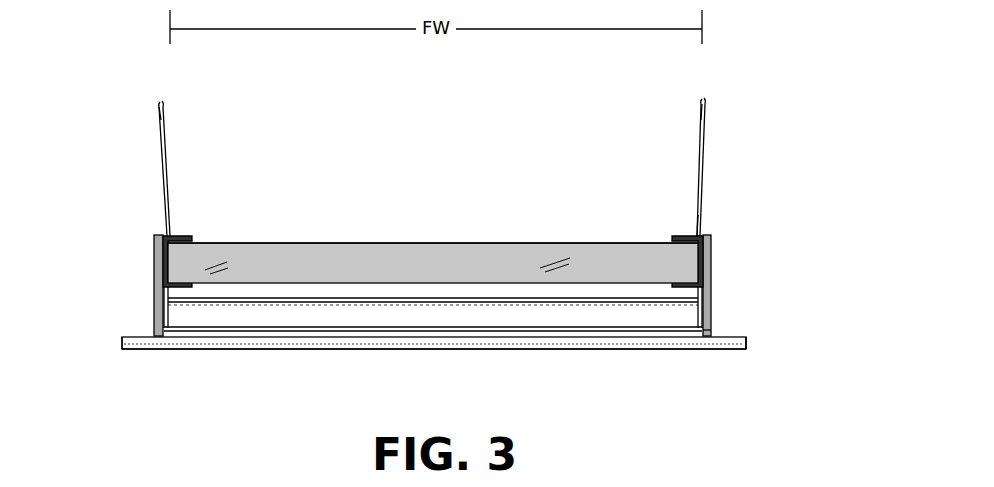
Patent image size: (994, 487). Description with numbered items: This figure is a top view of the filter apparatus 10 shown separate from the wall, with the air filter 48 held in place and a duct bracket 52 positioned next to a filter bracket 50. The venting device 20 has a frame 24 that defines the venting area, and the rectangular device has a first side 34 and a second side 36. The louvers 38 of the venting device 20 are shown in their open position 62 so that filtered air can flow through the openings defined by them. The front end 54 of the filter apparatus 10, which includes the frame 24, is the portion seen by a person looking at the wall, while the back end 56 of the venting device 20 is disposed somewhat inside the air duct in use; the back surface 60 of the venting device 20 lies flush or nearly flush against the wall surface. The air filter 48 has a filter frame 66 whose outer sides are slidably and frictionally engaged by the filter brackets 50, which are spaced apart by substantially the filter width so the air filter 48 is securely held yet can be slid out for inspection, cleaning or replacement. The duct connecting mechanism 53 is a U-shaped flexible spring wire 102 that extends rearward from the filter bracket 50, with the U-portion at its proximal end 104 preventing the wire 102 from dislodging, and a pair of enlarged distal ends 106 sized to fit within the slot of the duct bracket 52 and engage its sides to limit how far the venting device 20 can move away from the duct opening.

The filter apparatus 10 is at (487, 120).
The venting device 20 is at (538, 353).
The frame 24 is at (232, 349).
The first side 34 is at (123, 361).
The second side 36 is at (745, 362).
The louvers 38 is at (653, 318).
The air filter 48 is at (284, 250).
The filter bracket 50 is at (172, 258).
The duct bracket 52 is at (712, 257).
The duct connecting mechanism 53 is at (672, 140).
The front end 54 is at (769, 349).
The back end 56 is at (138, 237).
The back surface 60 is at (733, 338).
The open position 62 is at (326, 332).
The filter frame 66 is at (470, 258).
The flexible spring wire 102 is at (165, 141).
The proximal end 104 is at (690, 227).
The enlarged distal ends 106 is at (150, 105).